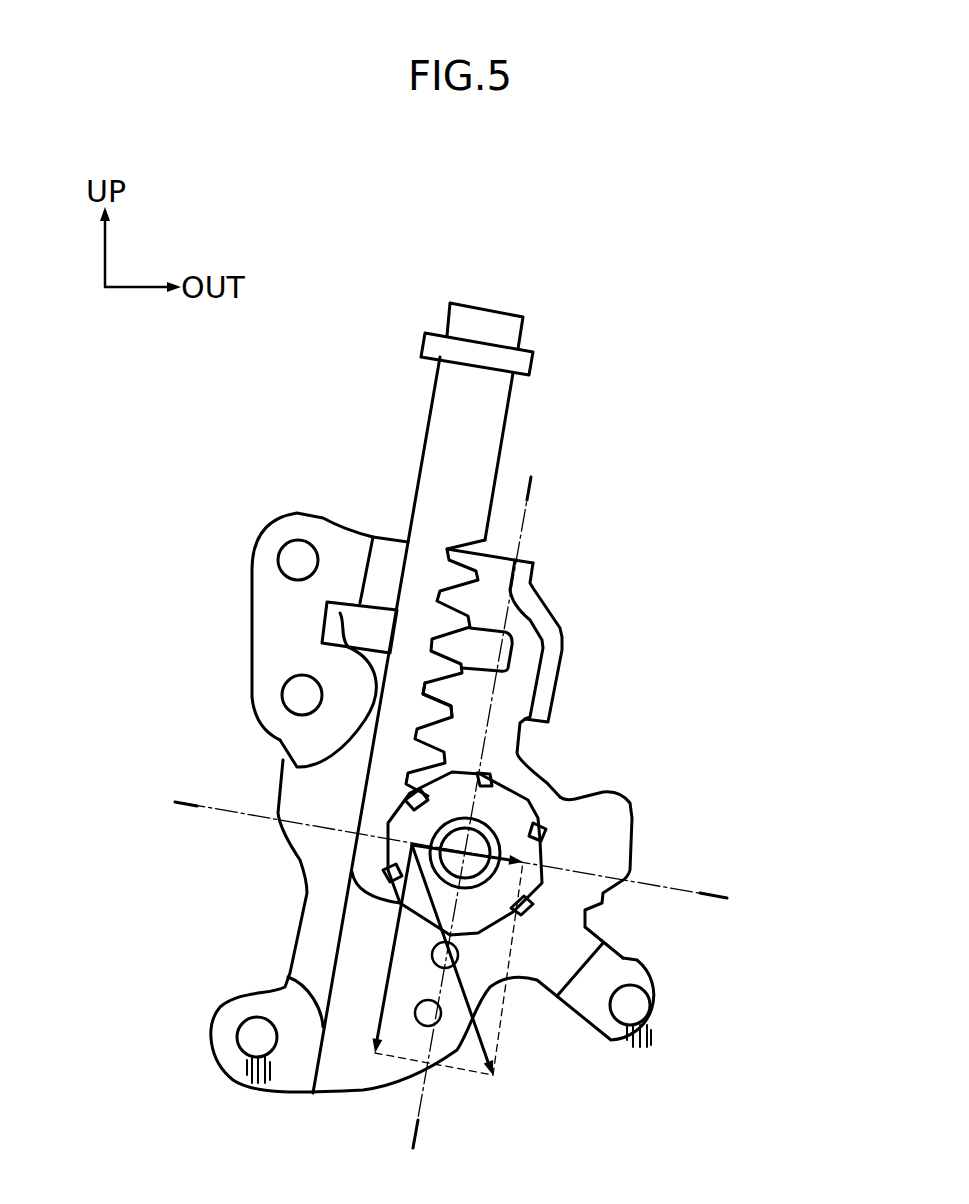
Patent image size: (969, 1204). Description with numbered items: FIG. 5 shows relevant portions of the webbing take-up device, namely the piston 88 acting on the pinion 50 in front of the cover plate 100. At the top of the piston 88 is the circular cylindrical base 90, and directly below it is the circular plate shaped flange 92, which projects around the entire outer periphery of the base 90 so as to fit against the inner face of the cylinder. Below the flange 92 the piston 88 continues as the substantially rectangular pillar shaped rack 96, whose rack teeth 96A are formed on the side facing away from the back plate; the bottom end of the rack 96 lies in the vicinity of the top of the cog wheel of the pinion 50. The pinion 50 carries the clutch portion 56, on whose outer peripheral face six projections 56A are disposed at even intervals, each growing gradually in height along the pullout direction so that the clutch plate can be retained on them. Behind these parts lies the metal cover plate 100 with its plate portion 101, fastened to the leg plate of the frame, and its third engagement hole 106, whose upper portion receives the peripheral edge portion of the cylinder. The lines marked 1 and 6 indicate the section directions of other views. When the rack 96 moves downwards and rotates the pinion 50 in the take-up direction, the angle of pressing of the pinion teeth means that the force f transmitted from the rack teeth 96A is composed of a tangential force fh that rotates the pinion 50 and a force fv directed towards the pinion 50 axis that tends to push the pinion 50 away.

The piston 88 is at (514, 309).
The base 90 is at (513, 327).
The flange 92 is at (527, 364).
The rack 96 is at (418, 622).
The rack teeth 96A is at (438, 713).
The cover plate 100 is at (520, 772).
The pinion 50 is at (540, 808).
The clutch portion 56 is at (453, 787).
The projections 56A is at (498, 790).
The third engagement hole 106 is at (327, 613).
The plate portion 101 is at (350, 947).
The section line 1 is at (550, 487).
The section line 6 is at (179, 822).
The force fv is at (522, 850).
The force fh is at (377, 1020).
The force f is at (487, 1036).